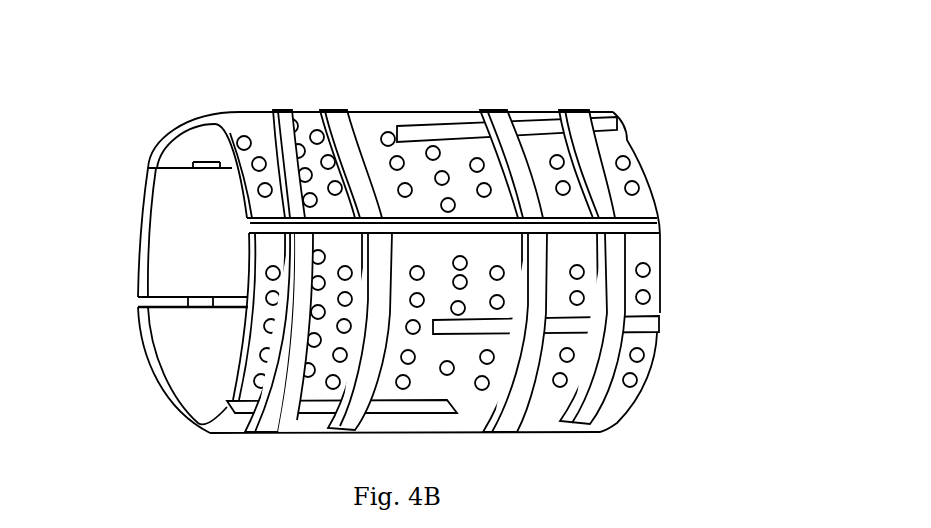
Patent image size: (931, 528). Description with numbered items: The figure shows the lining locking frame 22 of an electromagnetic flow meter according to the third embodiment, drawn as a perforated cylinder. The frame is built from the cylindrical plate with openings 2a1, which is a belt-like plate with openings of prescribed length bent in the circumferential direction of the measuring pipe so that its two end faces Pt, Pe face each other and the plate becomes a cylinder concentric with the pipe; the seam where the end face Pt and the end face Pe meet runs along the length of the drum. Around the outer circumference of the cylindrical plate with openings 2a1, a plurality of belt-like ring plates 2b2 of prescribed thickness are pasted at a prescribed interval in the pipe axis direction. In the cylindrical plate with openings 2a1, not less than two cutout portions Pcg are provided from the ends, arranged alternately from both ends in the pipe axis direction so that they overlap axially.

The lining locking frame 22 is at (410, 245).
The belt-like ring plates 2b2 is at (574, 101).
The cylindrical plate with openings 2a1 is at (652, 175).
The end face Pe is at (660, 231).
The cutout portions Pcg is at (645, 322).
The end face Pt is at (248, 227).